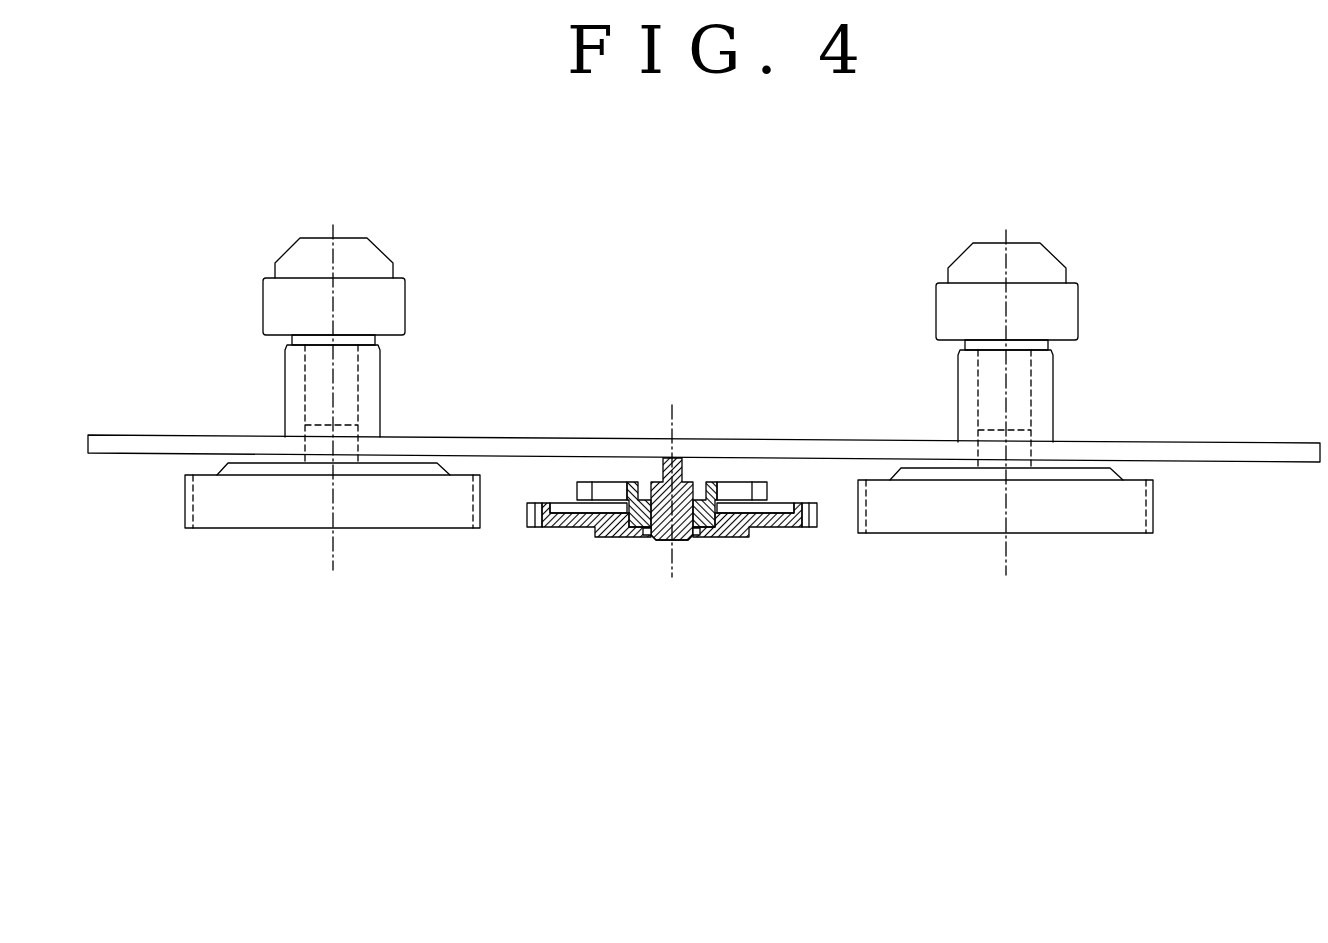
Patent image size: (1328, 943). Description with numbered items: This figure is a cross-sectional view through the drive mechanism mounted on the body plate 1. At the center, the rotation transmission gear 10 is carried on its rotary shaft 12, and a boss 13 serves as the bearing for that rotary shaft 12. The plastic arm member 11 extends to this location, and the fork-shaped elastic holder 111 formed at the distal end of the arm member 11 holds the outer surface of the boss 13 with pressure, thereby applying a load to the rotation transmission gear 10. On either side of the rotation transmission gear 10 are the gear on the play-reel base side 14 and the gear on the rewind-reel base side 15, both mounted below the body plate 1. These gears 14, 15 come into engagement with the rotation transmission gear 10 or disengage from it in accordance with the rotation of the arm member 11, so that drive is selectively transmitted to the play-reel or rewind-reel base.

The body plate 1 is at (1227, 455).
The rotation transmission gear 10 is at (547, 530).
The plastic arm member 11 is at (598, 492).
The fork-shaped elastic holder 111 is at (622, 497).
The rotary shaft 12 is at (682, 540).
The boss 13 is at (703, 497).
The gear on the play-reel base side 14 is at (1120, 505).
The gear on the rewind-reel base side 15 is at (225, 508).